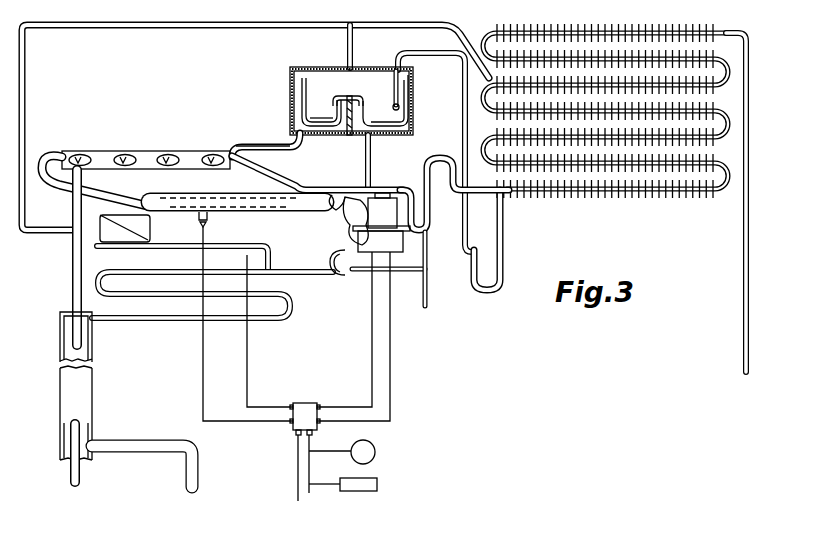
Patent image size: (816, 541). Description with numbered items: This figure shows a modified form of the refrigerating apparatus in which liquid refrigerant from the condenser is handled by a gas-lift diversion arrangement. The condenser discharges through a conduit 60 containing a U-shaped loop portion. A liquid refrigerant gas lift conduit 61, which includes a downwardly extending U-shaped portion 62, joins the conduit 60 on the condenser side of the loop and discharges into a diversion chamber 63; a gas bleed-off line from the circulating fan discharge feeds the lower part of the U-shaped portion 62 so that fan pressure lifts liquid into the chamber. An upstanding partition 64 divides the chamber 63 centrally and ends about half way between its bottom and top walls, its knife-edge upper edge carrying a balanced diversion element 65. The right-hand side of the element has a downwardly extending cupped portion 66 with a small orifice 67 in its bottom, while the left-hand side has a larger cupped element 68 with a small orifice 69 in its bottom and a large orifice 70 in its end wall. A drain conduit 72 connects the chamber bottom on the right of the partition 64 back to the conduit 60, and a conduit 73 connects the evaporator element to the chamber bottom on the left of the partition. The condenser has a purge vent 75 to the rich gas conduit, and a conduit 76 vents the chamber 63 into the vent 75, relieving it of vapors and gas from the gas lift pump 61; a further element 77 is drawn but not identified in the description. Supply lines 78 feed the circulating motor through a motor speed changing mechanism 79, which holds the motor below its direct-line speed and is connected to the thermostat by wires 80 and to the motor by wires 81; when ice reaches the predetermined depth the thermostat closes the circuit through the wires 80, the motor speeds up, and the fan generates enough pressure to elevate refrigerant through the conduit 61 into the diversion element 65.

The conduit 60 is at (390, 183).
The liquid refrigerant gas lift conduit 61 is at (464, 100).
The U-shaped portion 62 is at (504, 235).
The diversion chamber 63 is at (290, 86).
The upstanding partition 64 is at (348, 135).
The diversion element 65 is at (348, 93).
The cupped portion 66 is at (383, 100).
The small orifice 67 is at (413, 127).
The cupped element 68 is at (320, 109).
The small orifice 69 is at (300, 133).
The large orifice 70 is at (302, 105).
The drain conduit 72 is at (370, 152).
The conduit 73 is at (252, 140).
The purge vent 75 is at (460, 45).
The conduit 76 is at (352, 47).
The tube 77 is at (408, 96).
The supply lines 78 is at (300, 500).
The motor speed changing mechanism 79 is at (305, 403).
The wires 80 is at (203, 393).
The wires 81 is at (372, 360).